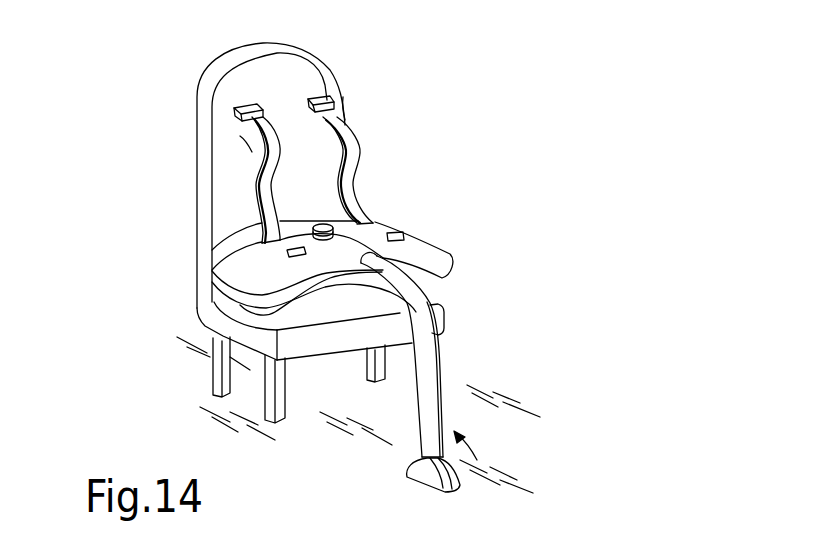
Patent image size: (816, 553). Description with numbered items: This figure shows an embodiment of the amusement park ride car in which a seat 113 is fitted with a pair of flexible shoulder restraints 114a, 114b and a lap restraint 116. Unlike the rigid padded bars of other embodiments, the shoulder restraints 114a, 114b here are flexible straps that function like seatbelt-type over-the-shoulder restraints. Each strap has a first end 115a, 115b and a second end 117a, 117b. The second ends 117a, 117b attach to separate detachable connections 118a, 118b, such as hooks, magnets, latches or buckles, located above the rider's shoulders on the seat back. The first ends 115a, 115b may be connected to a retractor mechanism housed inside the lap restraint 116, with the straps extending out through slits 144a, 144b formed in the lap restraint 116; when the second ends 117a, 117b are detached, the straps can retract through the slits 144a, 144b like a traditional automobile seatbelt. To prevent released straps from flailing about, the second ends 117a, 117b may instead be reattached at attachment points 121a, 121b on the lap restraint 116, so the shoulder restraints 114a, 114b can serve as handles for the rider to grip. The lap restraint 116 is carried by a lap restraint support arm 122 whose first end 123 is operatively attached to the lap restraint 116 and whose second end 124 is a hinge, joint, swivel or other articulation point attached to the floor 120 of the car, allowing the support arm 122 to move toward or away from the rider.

The seat 113 is at (203, 213).
The shoulder restraint 114a is at (256, 183).
The shoulder restraint 114b is at (360, 143).
The first end 115a is at (255, 223).
The first end 115b is at (367, 213).
The lap restraint 116 is at (238, 311).
The second end 117a is at (240, 136).
The second end 117b is at (343, 97).
The detachable connection 118a is at (242, 107).
The detachable connection 118b is at (323, 107).
The floor 120 is at (533, 450).
The attachment point 121a is at (290, 256).
The attachment point 121b is at (405, 234).
The lap restraint support arm 122 is at (430, 365).
The first end 123 is at (352, 273).
The second end 124 is at (405, 455).
The slit 144a is at (253, 243).
The slit 144b is at (385, 226).